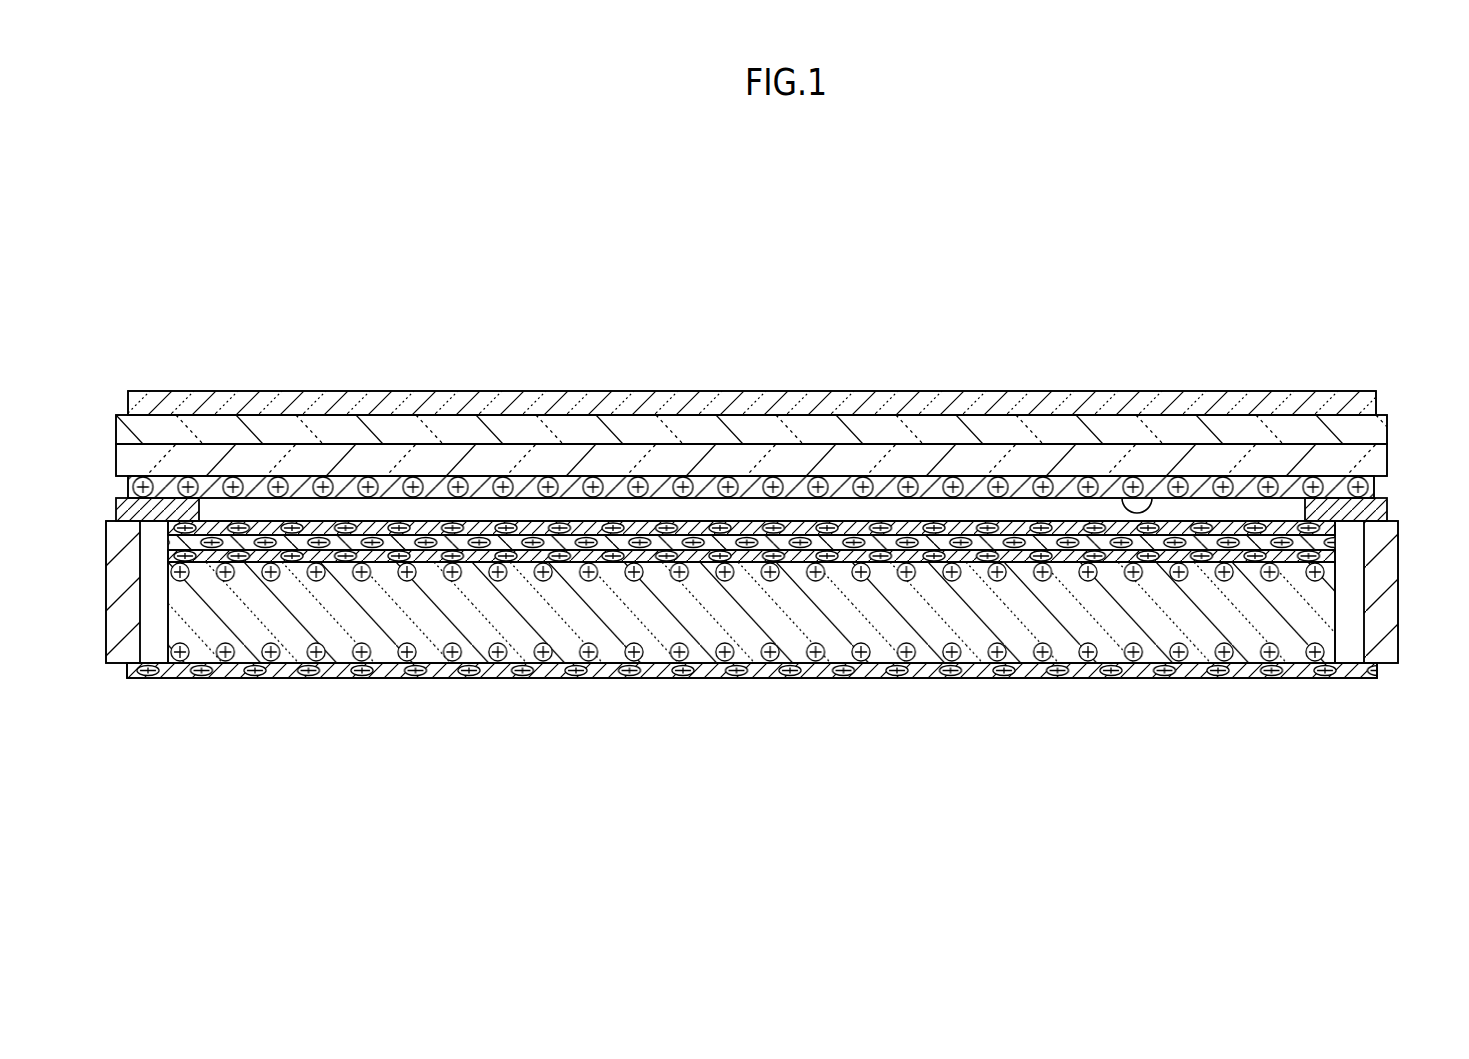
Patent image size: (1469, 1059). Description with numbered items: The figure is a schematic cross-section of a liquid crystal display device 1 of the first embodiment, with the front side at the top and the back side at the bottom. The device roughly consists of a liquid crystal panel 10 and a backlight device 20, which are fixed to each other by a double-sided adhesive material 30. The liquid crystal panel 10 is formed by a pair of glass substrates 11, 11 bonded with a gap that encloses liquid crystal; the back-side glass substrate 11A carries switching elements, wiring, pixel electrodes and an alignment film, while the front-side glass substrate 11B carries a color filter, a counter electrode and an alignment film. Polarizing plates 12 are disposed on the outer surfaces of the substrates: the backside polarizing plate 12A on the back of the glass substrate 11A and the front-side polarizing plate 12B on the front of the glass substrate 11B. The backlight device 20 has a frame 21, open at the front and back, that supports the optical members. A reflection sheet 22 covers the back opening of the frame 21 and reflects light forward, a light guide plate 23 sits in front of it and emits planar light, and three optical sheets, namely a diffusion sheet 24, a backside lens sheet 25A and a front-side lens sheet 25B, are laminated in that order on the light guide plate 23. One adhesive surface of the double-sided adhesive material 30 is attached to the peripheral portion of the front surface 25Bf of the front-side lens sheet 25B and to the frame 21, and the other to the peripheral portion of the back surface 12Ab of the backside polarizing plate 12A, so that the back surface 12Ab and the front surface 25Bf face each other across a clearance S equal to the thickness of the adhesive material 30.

The liquid crystal display device 1 is at (1298, 191).
The liquid crystal panel 10 is at (1413, 385).
The glass substrate 11 is at (751, 393).
The glass substrate 11A is at (490, 463).
The glass substrate 11B is at (622, 440).
The polarizing plate 12 is at (752, 412).
The backside polarizing plate 12A is at (350, 490).
The back surface of the backside polarizing plate 12Ab is at (1151, 497).
The front-side polarizing plate 12B is at (785, 410).
The backlight device 20 is at (1413, 522).
The frame 21 is at (115, 633).
The reflection sheet 22 is at (222, 677).
The light guide plate 23 is at (385, 630).
The diffusion sheet 24 is at (583, 536).
The backside lens sheet 25A is at (672, 545).
The front-side lens sheet 25B is at (790, 528).
The front surface of the front-side lens sheet 25Bf is at (1080, 516).
The double-sided adhesive material 30 is at (1388, 504).
The clearance S is at (1239, 500).